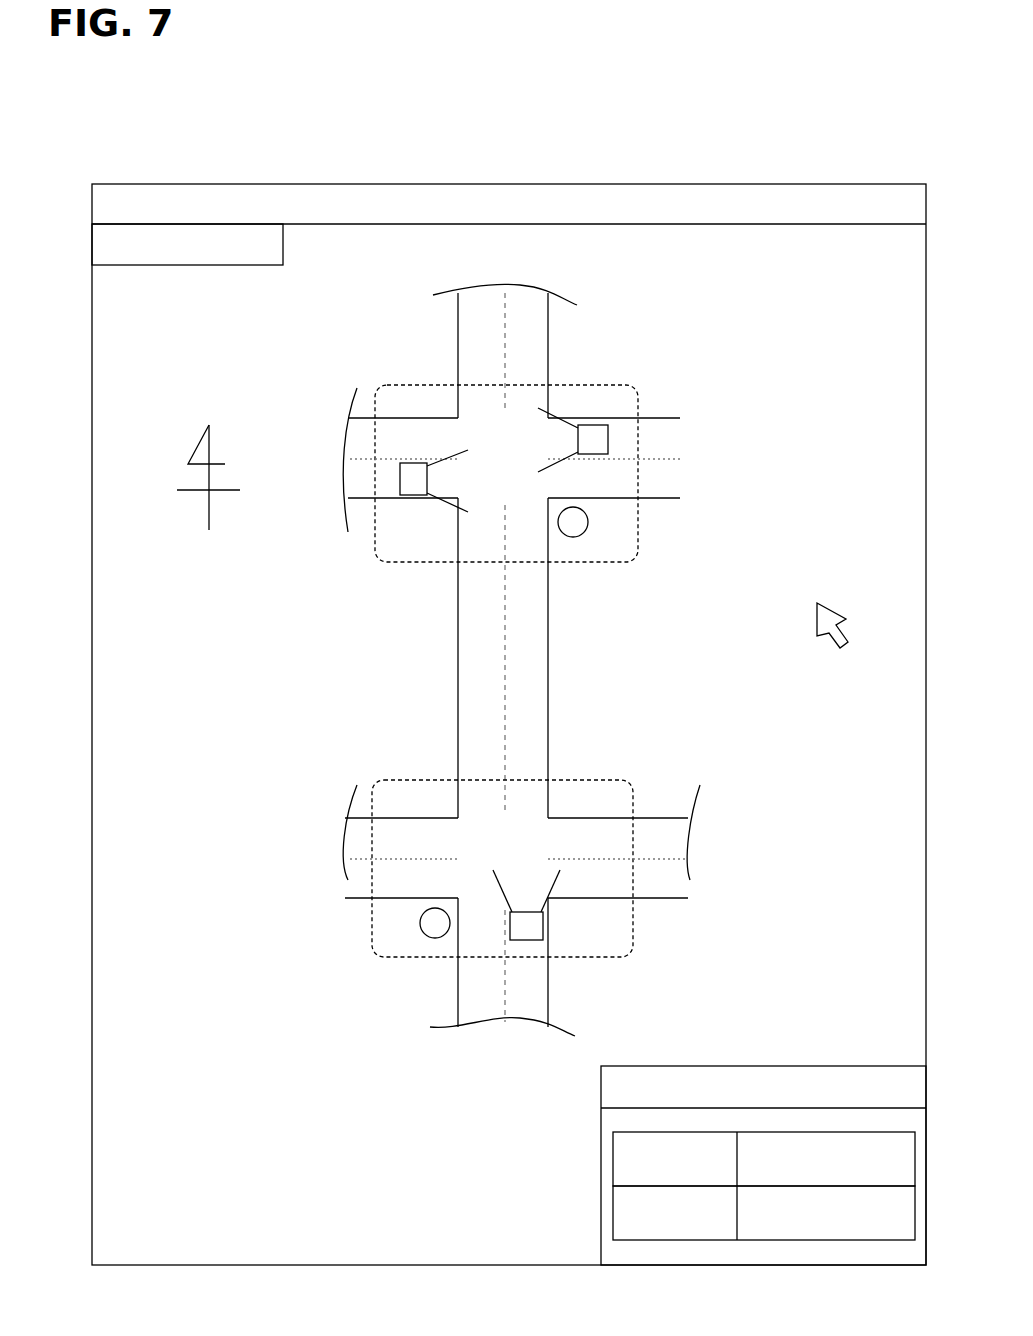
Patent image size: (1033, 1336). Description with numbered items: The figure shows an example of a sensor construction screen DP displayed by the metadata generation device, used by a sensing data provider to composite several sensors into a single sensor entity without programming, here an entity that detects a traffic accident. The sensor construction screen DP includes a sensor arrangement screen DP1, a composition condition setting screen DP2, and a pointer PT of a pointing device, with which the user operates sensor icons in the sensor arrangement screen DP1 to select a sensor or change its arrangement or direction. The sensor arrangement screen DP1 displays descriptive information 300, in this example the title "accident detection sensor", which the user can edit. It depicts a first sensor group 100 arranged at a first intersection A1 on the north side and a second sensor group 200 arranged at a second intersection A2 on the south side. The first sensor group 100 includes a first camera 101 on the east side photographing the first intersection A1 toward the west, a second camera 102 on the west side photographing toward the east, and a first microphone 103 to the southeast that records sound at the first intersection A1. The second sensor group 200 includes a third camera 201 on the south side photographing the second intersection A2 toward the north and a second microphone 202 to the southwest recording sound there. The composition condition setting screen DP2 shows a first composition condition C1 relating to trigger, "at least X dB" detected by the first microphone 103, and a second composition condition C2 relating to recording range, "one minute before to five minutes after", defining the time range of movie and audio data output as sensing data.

The sensor construction screen DP is at (780, 162).
The sensor arrangement screen DP1 is at (380, 264).
The composition condition setting screen DP2 is at (849, 1057).
The descriptive information 300 is at (206, 267).
The first sensor group 100 is at (592, 384).
The first camera 101 is at (612, 437).
The second camera 102 is at (398, 482).
The first microphone 103 is at (580, 537).
The first intersection A1 is at (526, 474).
The second sensor group 200 is at (591, 780).
The third camera 201 is at (530, 942).
The second microphone 202 is at (432, 940).
The second intersection A2 is at (526, 864).
The pointer PT is at (813, 620).
The first composition condition C1 is at (607, 1164).
The second composition condition C2 is at (607, 1214).